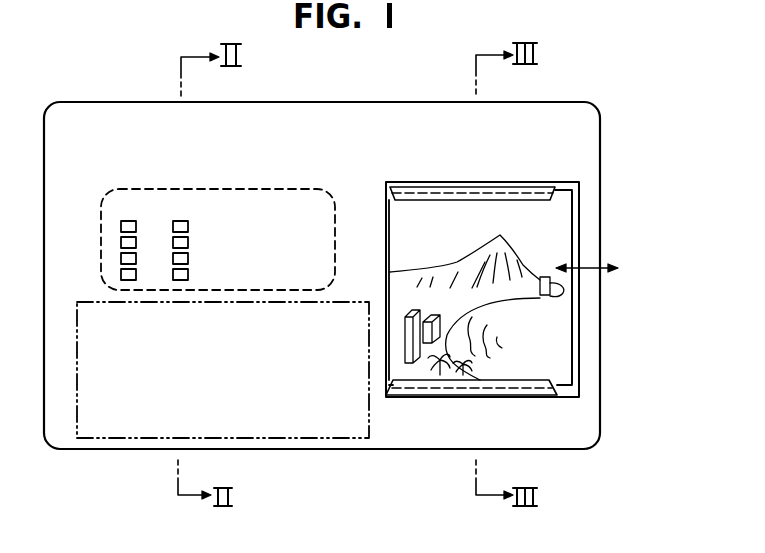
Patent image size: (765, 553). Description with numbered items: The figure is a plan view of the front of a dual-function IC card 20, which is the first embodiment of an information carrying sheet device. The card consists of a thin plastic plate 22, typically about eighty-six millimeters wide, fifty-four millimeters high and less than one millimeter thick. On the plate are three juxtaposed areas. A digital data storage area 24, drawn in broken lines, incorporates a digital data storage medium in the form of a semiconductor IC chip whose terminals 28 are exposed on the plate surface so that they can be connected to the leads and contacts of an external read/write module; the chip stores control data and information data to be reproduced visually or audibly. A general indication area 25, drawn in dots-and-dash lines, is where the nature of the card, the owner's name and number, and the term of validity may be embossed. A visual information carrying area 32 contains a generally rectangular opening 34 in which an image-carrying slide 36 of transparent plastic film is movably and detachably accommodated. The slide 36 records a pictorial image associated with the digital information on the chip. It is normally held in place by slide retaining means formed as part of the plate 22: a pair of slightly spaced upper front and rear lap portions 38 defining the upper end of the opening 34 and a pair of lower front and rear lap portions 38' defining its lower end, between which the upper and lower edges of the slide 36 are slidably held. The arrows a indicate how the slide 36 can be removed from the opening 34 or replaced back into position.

The IC card 20 is at (79, 96).
The plastic plate 22 is at (224, 136).
The digital data storage area 24 is at (267, 188).
The general indication area 25 is at (232, 375).
The terminals 28 is at (174, 220).
The visual information carrying area 32 is at (439, 168).
The opening 34 is at (577, 250).
The image-carrying slide 36 is at (584, 335).
The upper front and rear lap portions 38 is at (523, 187).
The lower front and rear lap portions 38' is at (523, 395).
The arrows a is at (588, 268).